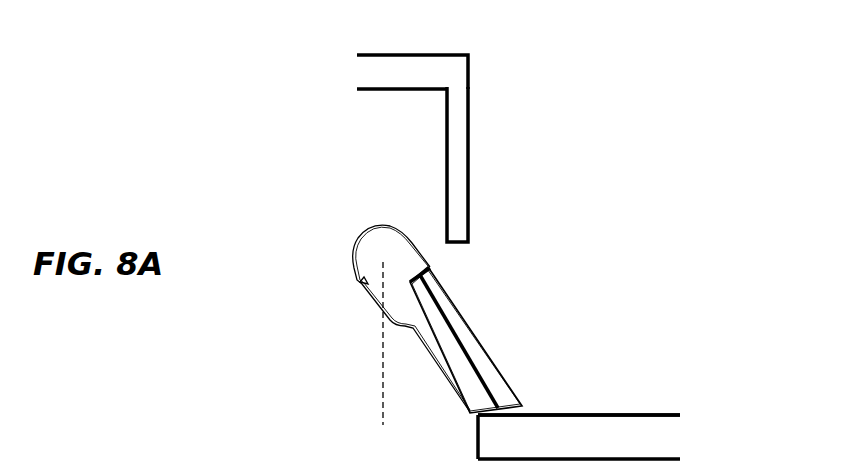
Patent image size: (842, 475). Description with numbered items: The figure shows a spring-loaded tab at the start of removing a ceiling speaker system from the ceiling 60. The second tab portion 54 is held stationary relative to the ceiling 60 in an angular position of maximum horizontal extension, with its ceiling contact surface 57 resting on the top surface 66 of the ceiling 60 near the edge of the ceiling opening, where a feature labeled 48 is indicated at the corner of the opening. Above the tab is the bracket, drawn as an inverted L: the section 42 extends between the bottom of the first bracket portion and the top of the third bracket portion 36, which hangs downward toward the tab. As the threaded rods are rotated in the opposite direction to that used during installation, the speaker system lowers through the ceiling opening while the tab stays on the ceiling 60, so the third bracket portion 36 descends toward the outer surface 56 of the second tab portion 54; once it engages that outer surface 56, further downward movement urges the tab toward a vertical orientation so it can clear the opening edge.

The section 42 is at (438, 55).
The third bracket portion 36 is at (467, 148).
The second tab portion 54 is at (288, 341).
The outer surface 56 is at (465, 310).
The ceiling contact surface 57 is at (455, 403).
The ceiling 60 is at (579, 437).
The top surface 66 is at (622, 411).
The pivot corner 48 is at (495, 419).